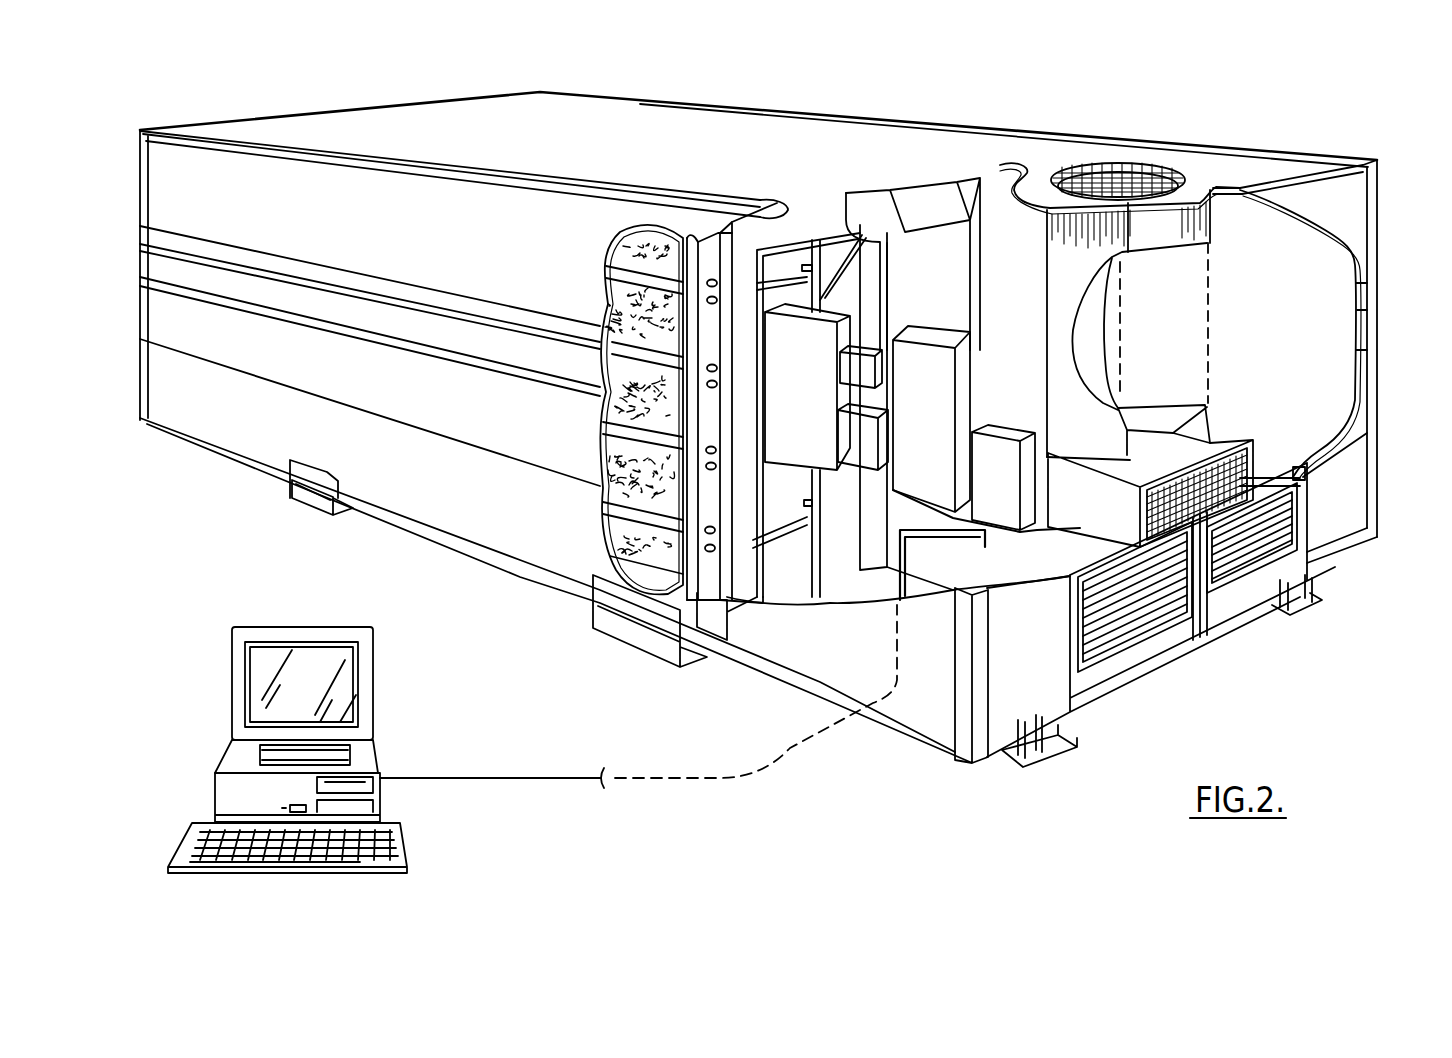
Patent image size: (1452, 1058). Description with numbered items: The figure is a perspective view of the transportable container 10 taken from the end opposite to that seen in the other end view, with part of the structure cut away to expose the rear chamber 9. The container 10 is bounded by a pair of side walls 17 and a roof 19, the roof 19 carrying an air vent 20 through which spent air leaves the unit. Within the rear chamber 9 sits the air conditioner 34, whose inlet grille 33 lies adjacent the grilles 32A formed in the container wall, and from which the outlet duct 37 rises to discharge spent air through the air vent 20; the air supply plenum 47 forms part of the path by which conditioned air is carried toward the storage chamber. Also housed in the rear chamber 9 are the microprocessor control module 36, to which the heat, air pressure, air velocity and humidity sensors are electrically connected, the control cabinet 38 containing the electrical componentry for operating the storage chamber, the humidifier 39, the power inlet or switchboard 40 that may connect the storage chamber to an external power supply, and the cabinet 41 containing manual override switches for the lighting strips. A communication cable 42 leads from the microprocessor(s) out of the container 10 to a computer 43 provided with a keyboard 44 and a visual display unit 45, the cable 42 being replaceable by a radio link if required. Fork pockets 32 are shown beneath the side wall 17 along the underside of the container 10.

The container 10 is at (789, 393).
The rear chamber 9 is at (1302, 317).
The side walls 17 is at (474, 266).
The roof 19 is at (670, 151).
The air vent 20 is at (1161, 168).
The fork lift pockets 32 is at (323, 505).
The grilles 32A is at (1232, 562).
The inlet grille 33 is at (1240, 478).
The air conditioner 34 is at (1118, 530).
The microprocessor control module 36 is at (1006, 488).
The outlet duct 37 is at (1188, 231).
The control cabinet 38 is at (938, 405).
The humidifier 39 is at (798, 340).
The switchboard 40 is at (868, 456).
The cabinet 41 is at (864, 368).
The communication cable 42 is at (790, 745).
The computer 43 is at (310, 724).
The keyboard 44 is at (395, 840).
The visual display unit 45 is at (352, 698).
The air supply plenum 47 is at (918, 213).